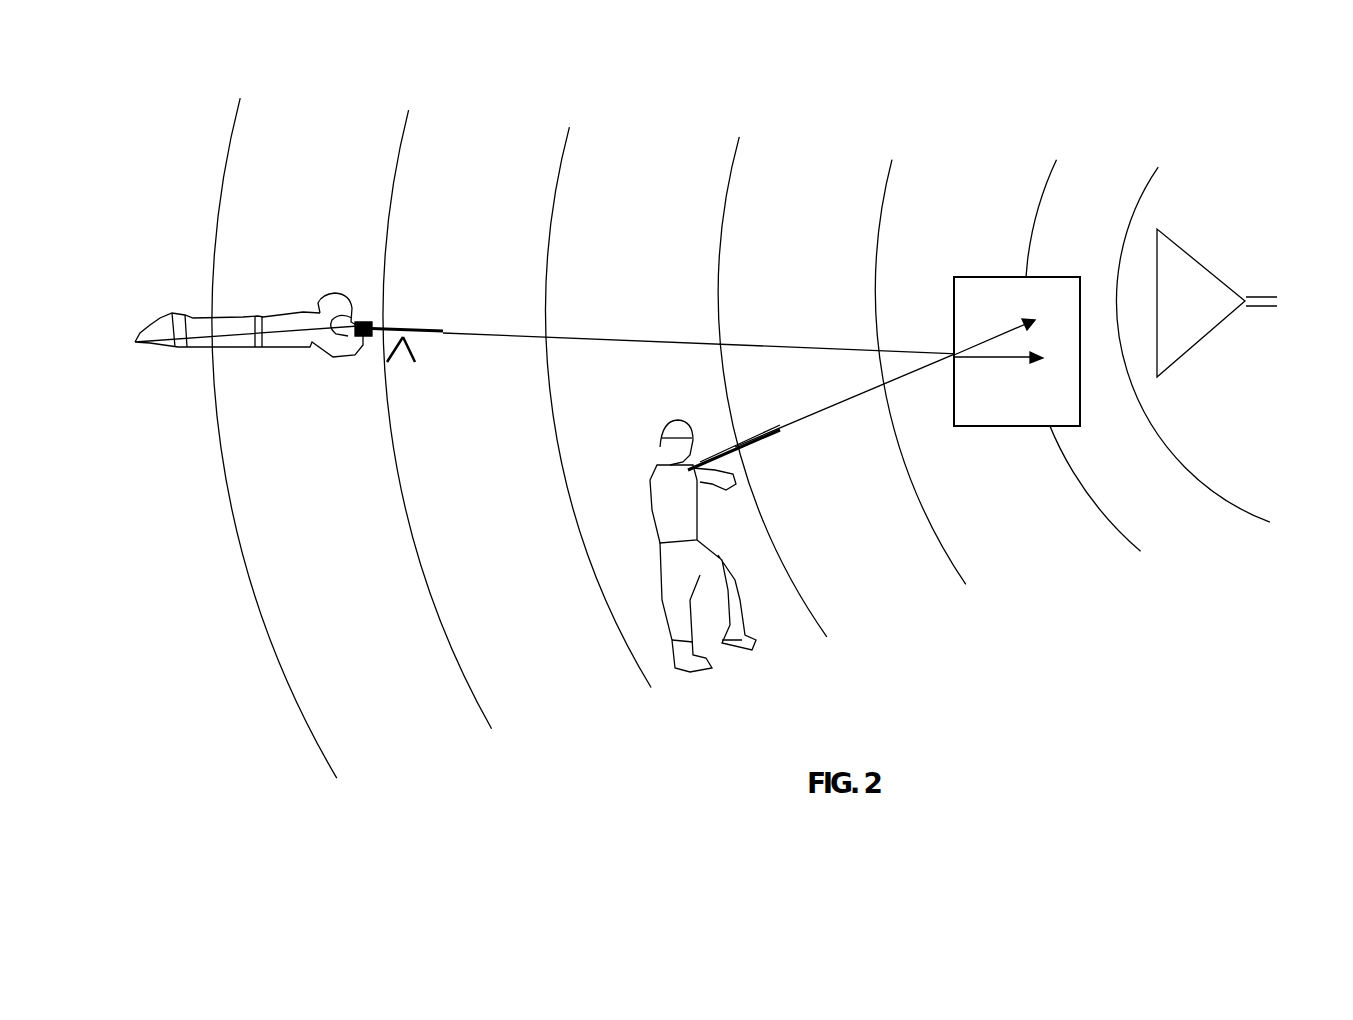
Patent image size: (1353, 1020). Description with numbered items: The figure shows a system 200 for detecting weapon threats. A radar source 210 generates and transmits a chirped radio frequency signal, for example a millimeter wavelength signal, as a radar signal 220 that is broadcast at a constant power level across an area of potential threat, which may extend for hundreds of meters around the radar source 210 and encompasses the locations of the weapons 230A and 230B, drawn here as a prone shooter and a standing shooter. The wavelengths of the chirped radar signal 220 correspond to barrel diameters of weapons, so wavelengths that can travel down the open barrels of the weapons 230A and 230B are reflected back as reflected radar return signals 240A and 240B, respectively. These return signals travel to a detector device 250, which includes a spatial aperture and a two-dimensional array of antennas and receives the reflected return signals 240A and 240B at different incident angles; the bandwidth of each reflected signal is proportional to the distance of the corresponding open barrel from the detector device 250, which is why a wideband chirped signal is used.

The system 200 is at (1247, 112).
The radar source 210 is at (1203, 258).
The radar signal 220 is at (1158, 168).
The weapon 230A is at (435, 348).
The weapon 230B is at (738, 433).
The reflected radar return signal 240A is at (620, 339).
The reflected radar return signal 240B is at (808, 418).
The detector device 250 is at (1028, 427).